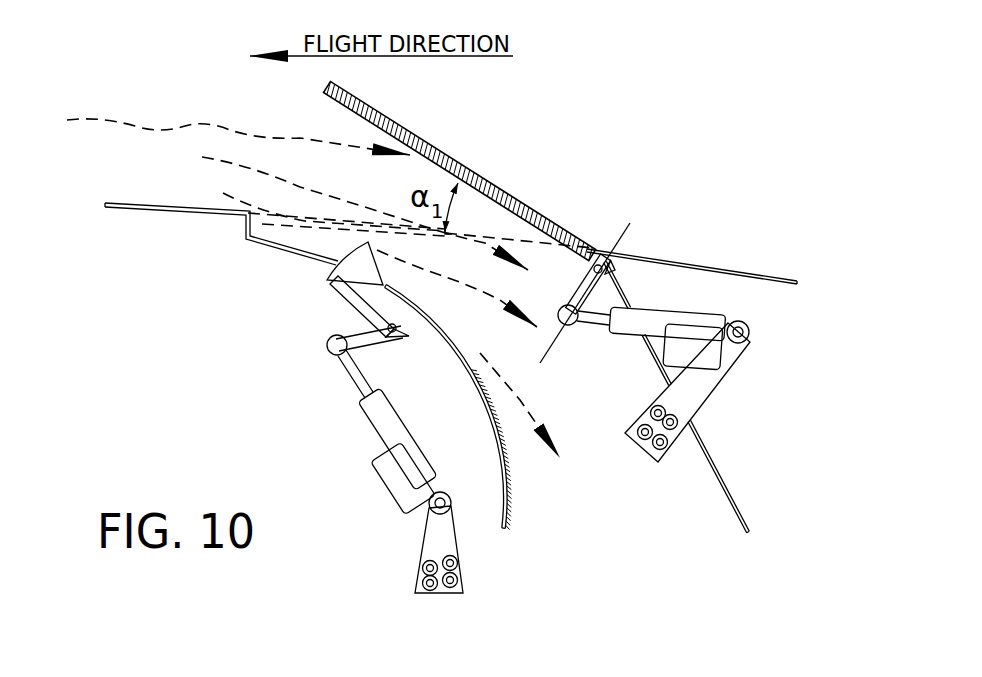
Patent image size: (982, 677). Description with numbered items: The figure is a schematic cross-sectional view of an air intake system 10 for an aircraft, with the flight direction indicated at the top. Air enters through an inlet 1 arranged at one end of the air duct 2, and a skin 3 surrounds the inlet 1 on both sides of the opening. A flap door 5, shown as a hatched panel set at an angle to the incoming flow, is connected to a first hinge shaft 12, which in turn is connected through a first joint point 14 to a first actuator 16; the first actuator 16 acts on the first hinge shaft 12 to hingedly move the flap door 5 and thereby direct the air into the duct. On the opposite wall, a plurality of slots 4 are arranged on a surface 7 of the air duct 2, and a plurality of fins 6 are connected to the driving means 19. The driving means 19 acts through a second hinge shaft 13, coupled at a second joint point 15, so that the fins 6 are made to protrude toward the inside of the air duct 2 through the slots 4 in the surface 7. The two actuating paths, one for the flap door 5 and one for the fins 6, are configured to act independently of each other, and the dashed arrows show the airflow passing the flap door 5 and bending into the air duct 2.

The inlet 1 is at (318, 217).
The air duct 2 is at (697, 508).
The skin 3 is at (120, 202).
The slots 4 is at (385, 288).
The flap door 5 is at (425, 140).
The fins 6 is at (348, 275).
The surface 7 is at (503, 483).
The air intake system 10 is at (586, 307).
The first hinge shaft 12 is at (612, 287).
The second hinge shaft 13 is at (377, 328).
The first joint point 14 is at (580, 328).
The second joint point 15 is at (327, 343).
The first actuator 16 is at (745, 317).
The driving means 19 is at (367, 477).